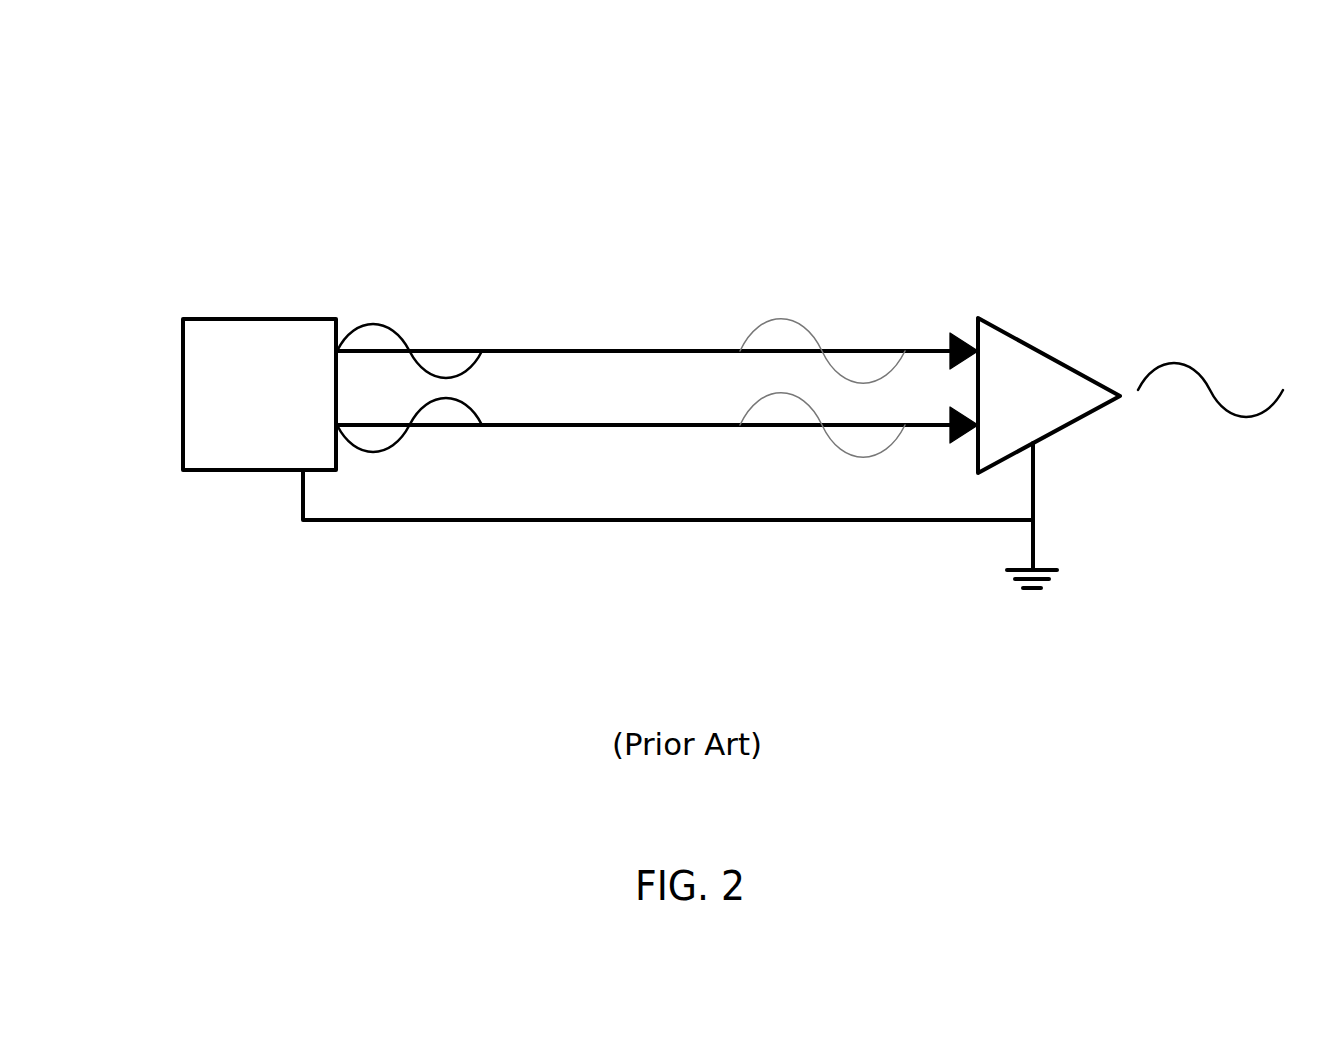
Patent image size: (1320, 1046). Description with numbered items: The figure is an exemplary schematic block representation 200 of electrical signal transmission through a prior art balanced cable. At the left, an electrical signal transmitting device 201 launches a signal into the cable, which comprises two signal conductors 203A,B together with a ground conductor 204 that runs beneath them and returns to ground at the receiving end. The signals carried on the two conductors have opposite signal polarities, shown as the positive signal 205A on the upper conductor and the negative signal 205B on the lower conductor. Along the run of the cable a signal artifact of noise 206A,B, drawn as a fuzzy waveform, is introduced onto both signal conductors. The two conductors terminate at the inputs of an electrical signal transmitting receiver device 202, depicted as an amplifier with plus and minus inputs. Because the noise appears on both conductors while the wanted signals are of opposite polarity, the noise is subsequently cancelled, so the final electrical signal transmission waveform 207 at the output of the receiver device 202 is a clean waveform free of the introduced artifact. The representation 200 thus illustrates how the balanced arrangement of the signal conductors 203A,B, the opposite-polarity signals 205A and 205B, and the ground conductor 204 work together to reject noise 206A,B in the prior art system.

The schematic block representation 200 is at (173, 51).
The electrical signal transmitting device 201 is at (237, 303).
The electrical signal transmitting receiver device 202 is at (1038, 303).
The signal conductors 203A,B is at (675, 224).
The ground conductor 204 is at (560, 524).
The signal having opposite signal polarity 205A is at (347, 342).
The signal having opposite signal polarity 205B is at (355, 452).
The signal artifact of noise 206A,B is at (882, 193).
The final electrical signal transmission waveform 207 is at (1237, 235).